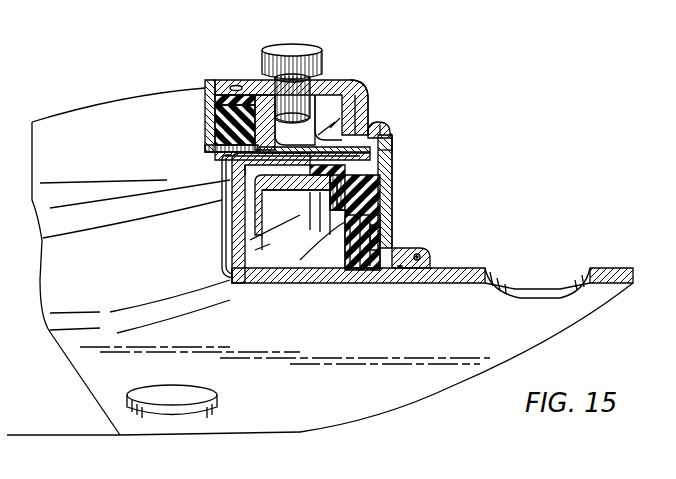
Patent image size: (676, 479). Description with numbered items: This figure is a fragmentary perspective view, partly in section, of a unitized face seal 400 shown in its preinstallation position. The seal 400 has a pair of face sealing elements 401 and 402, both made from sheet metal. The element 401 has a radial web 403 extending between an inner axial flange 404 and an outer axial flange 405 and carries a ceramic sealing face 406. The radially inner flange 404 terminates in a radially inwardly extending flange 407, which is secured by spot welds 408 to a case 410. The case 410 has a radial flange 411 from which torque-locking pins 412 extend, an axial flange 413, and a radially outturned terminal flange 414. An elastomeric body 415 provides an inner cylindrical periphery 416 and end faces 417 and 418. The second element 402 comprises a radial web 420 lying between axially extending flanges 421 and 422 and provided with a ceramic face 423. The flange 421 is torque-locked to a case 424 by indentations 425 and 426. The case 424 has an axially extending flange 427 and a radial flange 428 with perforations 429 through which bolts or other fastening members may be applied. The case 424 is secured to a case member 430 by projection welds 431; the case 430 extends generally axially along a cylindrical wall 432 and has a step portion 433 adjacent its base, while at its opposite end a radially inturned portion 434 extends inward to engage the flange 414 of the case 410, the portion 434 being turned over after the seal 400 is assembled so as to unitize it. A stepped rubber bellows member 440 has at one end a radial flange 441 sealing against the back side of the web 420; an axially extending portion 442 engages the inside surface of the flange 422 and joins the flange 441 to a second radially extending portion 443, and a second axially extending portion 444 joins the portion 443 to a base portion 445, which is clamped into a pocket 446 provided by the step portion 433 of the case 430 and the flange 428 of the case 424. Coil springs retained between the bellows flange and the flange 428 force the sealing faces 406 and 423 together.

The seal 400 is at (405, 59).
The face sealing element 401 is at (337, 121).
The face sealing element 402 is at (245, 204).
The radial web 403 is at (312, 125).
The inner axial flange 404 is at (235, 126).
The outer axial flange 405 is at (370, 125).
The ceramic sealing face 406 is at (395, 142).
The radially inwardly extending flange 407 is at (262, 93).
The spot welds 408 is at (234, 85).
The case 410 is at (356, 82).
The radial flange 411 is at (330, 80).
The torque-locking pins 412 is at (292, 52).
The axial flange 413 is at (364, 110).
The radially outturned terminal flange 414 is at (391, 131).
The elastomeric body 415 is at (214, 108).
The inner cylindrical periphery 416 is at (208, 144).
The end face 417 is at (180, 171).
The end face 418 is at (209, 80).
The radial web 420 is at (242, 166).
The axially extending flange 421 is at (252, 216).
The axially extending flange 422 is at (342, 188).
The ceramic face 423 is at (390, 154).
The case 424 is at (240, 283).
The indentation 425 is at (325, 240).
The indentation 426 is at (232, 246).
The axially extending flange 427 is at (207, 240).
The radial flange 428 is at (386, 341).
The perforations 429 is at (535, 290).
The case member 430 is at (408, 178).
The projection welds 431 is at (427, 272).
The cylindrical wall 432 is at (393, 190).
The step portion 433 is at (410, 246).
The radially inturned portion 434 is at (380, 124).
The stepped rubber bellows member 440 is at (378, 226).
The radial flange 441 is at (266, 184).
The axially extending portion 442 is at (268, 208).
The second radially extending portion 443 is at (345, 215).
The second axially extending portion 444 is at (368, 236).
The base portion 445 is at (398, 270).
The pocket 446 is at (422, 257).